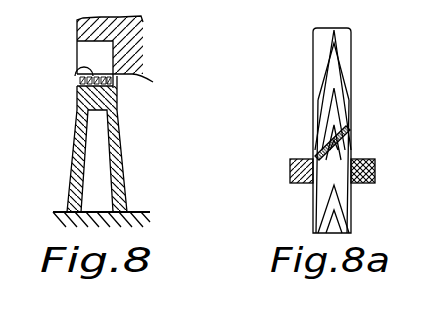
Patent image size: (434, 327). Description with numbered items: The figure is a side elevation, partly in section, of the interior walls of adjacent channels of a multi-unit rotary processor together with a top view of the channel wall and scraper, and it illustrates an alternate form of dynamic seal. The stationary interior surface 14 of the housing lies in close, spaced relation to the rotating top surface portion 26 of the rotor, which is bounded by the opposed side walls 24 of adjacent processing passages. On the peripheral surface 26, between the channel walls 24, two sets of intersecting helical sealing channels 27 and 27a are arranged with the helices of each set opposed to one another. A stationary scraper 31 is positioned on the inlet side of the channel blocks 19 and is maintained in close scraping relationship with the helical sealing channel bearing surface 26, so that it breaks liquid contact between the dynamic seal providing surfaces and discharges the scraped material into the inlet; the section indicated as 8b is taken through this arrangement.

In FIG. 8, the interior surface 14 is at (129, 54).
In FIG. 8, the scraper 31 is at (87, 53).
In FIG. 8A, the scraper 31 is at (328, 141).
In FIG. 8, the top surface portion 26 is at (77, 73).
In FIG. 8A, the top surface portion 26 is at (338, 42).
In FIG. 8, the helical sealing channel 27 is at (112, 85).
In FIG. 8A, the helical sealing channel 27 is at (340, 68).
In FIG. 8A, the helical sealing channel 27a is at (328, 65).
In FIG. 8, the side wall 24 is at (72, 158).
In FIG. 8A, the channel block 19 is at (290, 172).
In FIG. 8A, the section line 8b- 8b is at (315, 130).